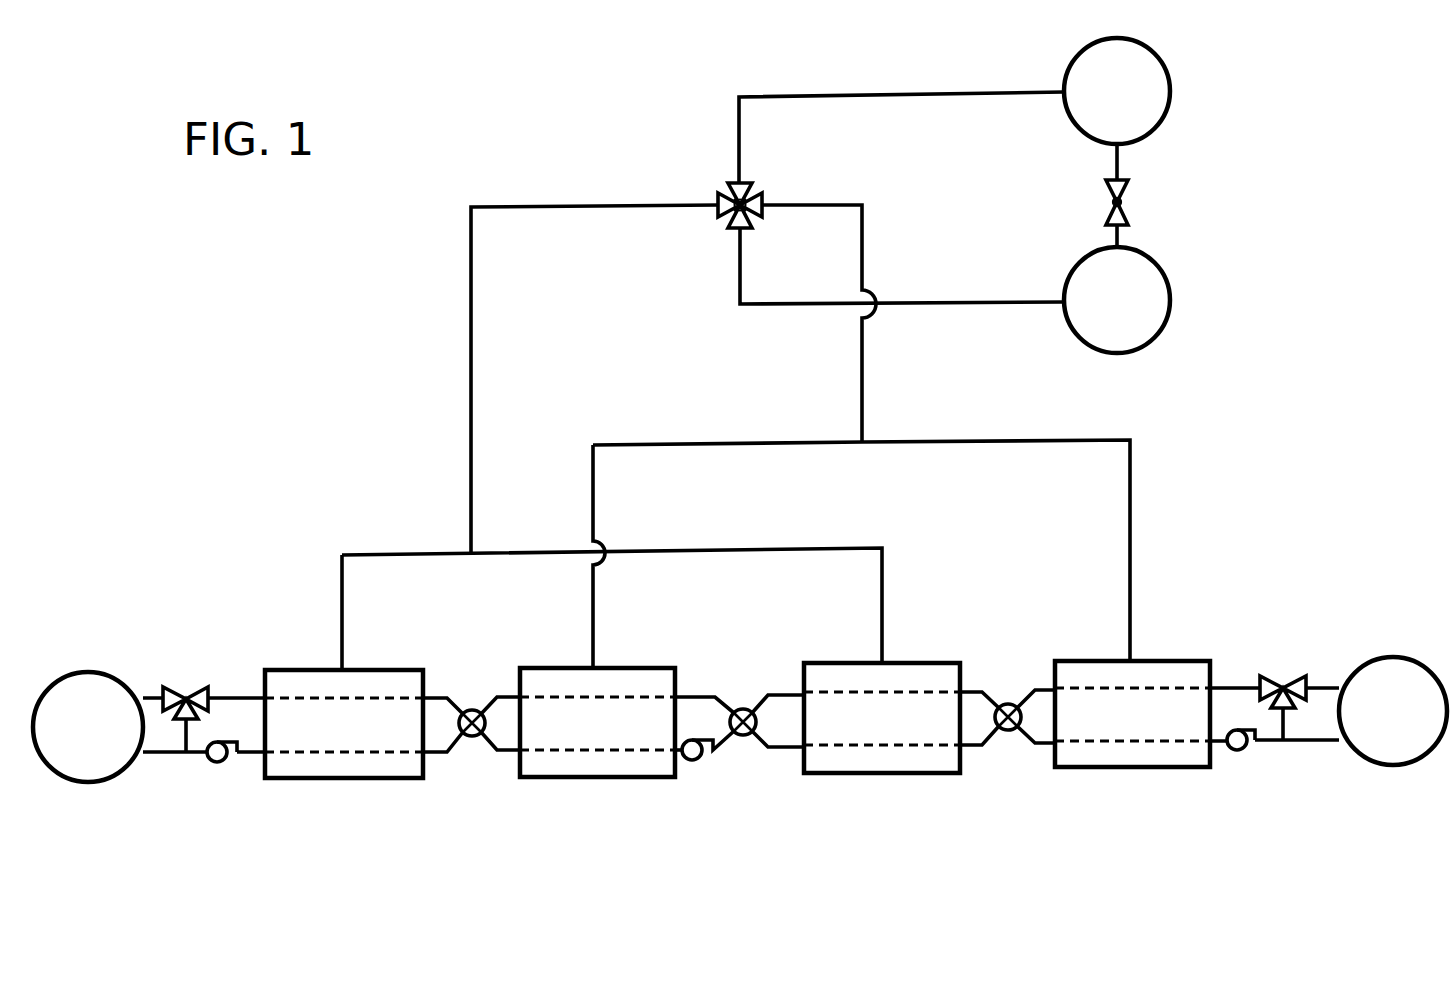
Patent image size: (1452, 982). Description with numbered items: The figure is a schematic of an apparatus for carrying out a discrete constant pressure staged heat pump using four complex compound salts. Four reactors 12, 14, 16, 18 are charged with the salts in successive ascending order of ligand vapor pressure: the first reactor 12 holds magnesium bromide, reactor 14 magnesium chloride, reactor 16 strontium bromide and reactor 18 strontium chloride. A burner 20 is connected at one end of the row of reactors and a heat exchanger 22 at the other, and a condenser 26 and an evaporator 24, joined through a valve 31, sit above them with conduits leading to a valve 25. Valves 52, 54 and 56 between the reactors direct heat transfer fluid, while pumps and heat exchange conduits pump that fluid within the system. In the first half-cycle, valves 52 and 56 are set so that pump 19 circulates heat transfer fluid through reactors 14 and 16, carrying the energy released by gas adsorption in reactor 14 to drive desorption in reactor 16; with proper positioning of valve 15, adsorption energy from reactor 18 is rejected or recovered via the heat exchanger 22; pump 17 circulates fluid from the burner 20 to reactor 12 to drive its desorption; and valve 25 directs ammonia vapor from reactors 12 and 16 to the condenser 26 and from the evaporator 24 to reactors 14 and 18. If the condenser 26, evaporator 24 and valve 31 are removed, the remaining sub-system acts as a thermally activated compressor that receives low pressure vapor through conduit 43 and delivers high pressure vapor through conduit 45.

The first reactor 12 is at (370, 780).
The reactor 14 is at (622, 778).
The valve 15 is at (1283, 688).
The reactor 16 is at (922, 775).
The pump 17 is at (212, 763).
The reactor 18 is at (1155, 768).
The pump 19 is at (700, 760).
The burner 20 is at (98, 782).
The heat exchanger 22 is at (1427, 753).
The evaporator 24 is at (1170, 317).
The valve 25 is at (736, 196).
The condenser 26 is at (1150, 47).
The valve 31 is at (1124, 203).
The conduit 43 is at (1037, 300).
The conduit 45 is at (892, 95).
The valve 52 is at (470, 708).
The valve 54 is at (740, 708).
The valve 56 is at (1007, 703).